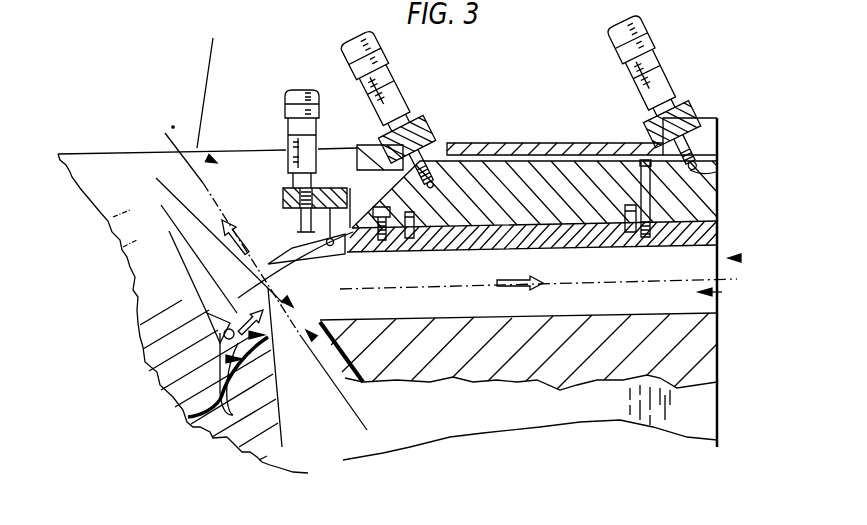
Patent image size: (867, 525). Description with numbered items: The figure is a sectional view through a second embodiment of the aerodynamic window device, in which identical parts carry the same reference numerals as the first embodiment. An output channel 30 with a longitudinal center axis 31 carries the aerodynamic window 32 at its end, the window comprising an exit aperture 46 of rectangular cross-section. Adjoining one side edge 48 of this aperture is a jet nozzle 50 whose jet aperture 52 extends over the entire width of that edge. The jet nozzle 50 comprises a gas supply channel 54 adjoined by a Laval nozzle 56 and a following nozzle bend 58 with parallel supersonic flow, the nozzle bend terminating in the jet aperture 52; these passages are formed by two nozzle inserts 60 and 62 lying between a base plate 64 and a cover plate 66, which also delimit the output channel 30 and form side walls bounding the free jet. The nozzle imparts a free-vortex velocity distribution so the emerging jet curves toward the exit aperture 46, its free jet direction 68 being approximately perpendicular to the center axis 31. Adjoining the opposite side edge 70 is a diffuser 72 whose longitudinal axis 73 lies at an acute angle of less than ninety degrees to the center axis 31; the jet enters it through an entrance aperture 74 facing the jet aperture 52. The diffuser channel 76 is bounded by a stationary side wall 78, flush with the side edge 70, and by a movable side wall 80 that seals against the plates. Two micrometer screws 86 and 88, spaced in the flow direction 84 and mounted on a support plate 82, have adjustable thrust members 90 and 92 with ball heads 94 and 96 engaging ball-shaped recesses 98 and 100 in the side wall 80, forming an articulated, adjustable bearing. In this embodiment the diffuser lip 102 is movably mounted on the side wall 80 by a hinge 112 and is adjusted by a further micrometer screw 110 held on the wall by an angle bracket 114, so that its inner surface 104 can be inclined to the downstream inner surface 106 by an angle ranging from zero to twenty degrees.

The output channel 30 is at (343, 377).
The longitudinal center axis 31 is at (172, 124).
The aerodynamic window 32 is at (213, 38).
The exit aperture 46 is at (330, 334).
The side edge 48 is at (273, 335).
The jet nozzle 50 is at (267, 330).
The jet aperture 52 is at (283, 444).
The gas supply channel 54 is at (197, 427).
The Laval nozzle 56 is at (207, 402).
The nozzle bend 58 is at (169, 231).
The nozzle insert 60 is at (242, 453).
The nozzle insert 62 is at (187, 423).
The base plate 64 is at (87, 157).
The cover plate 66 is at (717, 412).
The free jet direction 68 is at (161, 205).
The side edge 70 is at (340, 331).
The diffuser 72 is at (745, 258).
The longitudinal axis 73 is at (722, 292).
The entrance aperture 74 is at (156, 178).
The diffuser channel 76 is at (720, 315).
The stationary side wall 78 is at (717, 360).
The movable side wall 80 is at (717, 212).
The support plate 82 is at (362, 147).
The flow direction 84 is at (500, 290).
The micrometer screw 86 is at (388, 78).
The micrometer screw 88 is at (648, 64).
The thrust member 90 is at (448, 133).
The thrust member 92 is at (703, 155).
The ball head 94 is at (452, 143).
The ball head 96 is at (722, 162).
The ball-shaped recess 98 is at (440, 176).
The ball-shaped recess 100 is at (722, 192).
The diffuser lip 102 is at (270, 258).
The inner surface 104 is at (297, 262).
The inner surface 106 is at (421, 263).
The micrometer screw 110 is at (289, 93).
The hinge 112 is at (329, 253).
The angle bracket 114 is at (283, 193).